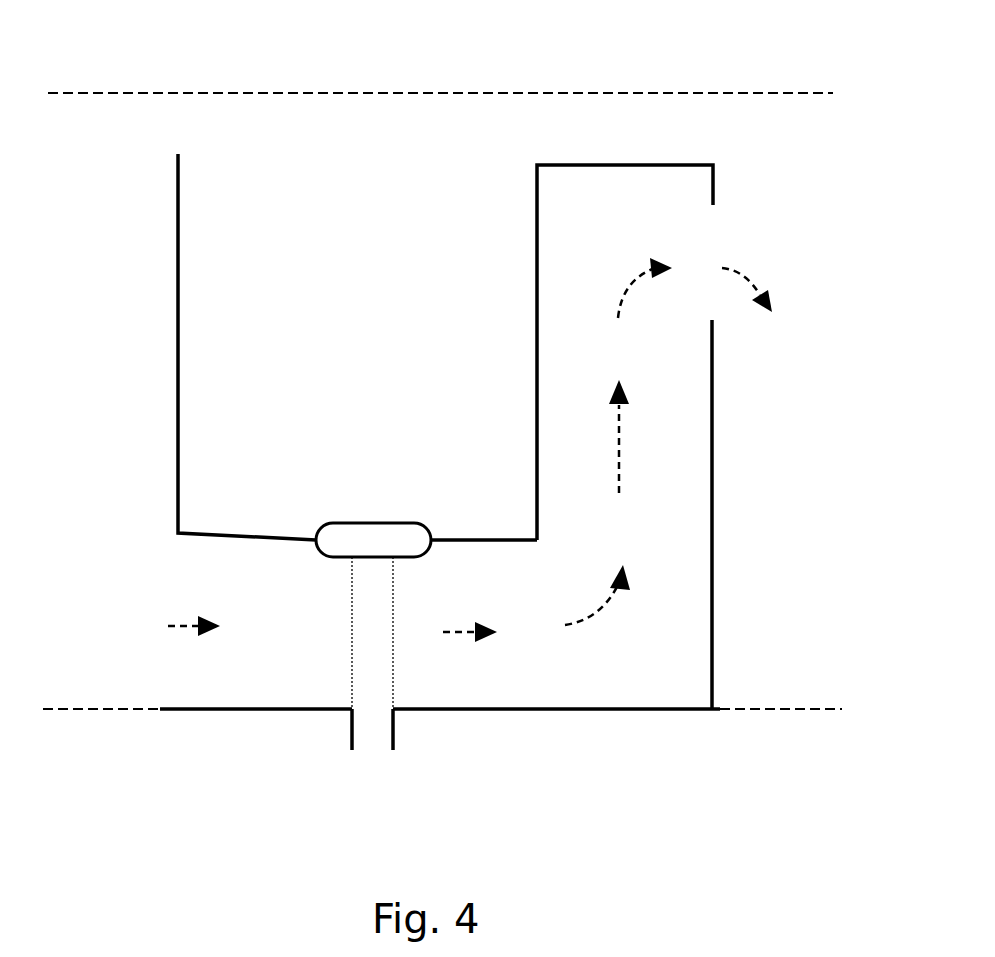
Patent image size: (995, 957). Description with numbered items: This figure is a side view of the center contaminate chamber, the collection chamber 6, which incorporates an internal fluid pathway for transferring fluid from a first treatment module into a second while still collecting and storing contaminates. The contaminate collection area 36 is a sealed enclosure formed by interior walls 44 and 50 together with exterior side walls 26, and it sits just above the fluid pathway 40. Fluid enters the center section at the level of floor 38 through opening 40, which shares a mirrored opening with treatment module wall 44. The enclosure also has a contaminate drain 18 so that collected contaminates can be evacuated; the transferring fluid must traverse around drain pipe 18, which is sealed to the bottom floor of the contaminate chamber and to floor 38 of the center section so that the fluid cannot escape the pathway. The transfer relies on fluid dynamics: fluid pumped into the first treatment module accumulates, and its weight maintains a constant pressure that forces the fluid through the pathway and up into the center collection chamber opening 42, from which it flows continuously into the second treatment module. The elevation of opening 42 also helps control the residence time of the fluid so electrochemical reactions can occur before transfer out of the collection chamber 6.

The collection chamber 6 is at (620, 165).
The contaminate drain 18 is at (343, 738).
The exterior side walls 26 is at (141, 83).
The contaminate collection area 36 is at (353, 390).
The floor 38 is at (628, 709).
The fluid pathway 40 is at (167, 587).
The center collection chamber opening 42 is at (702, 237).
The interior wall 44 is at (178, 370).
The interior wall 50 is at (712, 463).